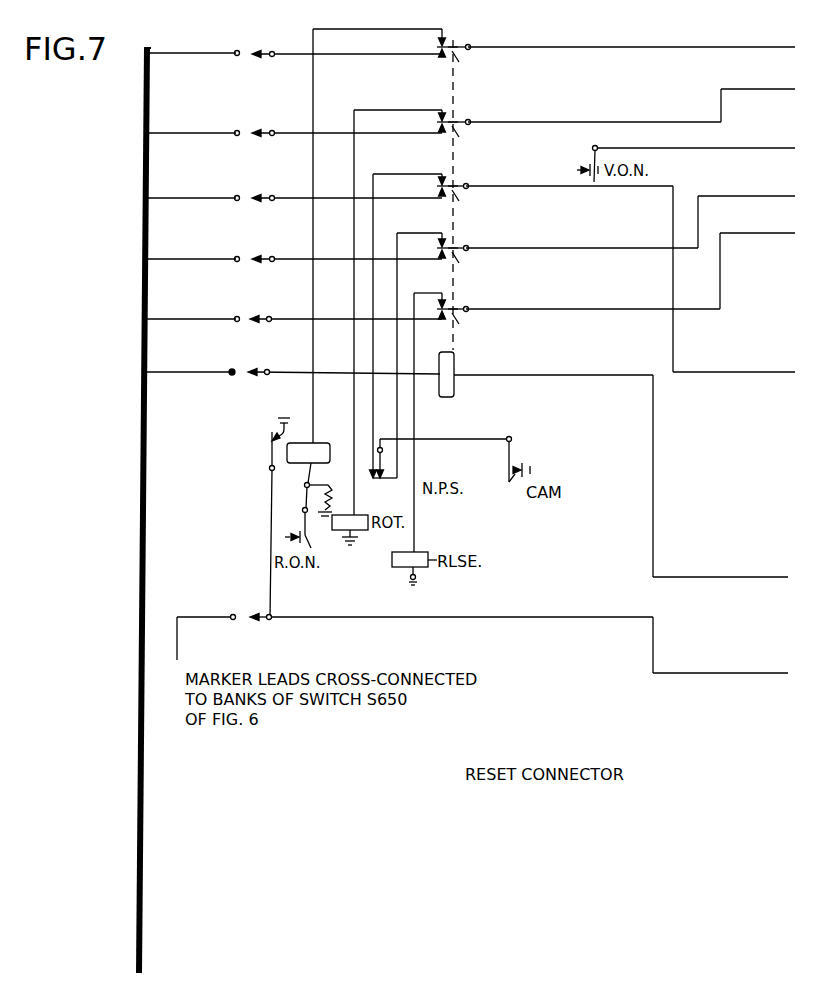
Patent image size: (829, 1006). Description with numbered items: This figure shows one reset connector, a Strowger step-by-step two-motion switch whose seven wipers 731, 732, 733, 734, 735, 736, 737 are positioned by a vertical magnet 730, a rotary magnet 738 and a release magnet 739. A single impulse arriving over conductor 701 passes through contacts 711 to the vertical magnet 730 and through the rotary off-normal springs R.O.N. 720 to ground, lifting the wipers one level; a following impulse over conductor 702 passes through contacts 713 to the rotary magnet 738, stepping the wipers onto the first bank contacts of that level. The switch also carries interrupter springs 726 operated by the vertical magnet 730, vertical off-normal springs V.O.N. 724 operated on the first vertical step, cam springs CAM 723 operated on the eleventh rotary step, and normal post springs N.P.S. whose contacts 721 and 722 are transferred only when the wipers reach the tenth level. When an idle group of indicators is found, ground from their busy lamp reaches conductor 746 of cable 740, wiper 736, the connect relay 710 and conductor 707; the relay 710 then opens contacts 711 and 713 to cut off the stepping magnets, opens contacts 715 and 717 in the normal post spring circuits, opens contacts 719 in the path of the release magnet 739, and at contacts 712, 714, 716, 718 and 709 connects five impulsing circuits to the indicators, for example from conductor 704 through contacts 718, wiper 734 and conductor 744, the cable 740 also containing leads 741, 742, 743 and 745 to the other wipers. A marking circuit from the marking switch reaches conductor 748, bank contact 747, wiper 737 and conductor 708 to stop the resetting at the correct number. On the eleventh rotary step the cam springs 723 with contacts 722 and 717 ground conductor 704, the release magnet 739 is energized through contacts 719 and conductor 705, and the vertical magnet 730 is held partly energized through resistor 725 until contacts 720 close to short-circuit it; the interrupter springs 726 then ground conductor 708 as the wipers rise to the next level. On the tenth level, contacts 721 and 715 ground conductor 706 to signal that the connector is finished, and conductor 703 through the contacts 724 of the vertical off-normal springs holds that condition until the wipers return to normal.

The conductor 701 is at (738, 47).
The conductor 702 is at (738, 88).
The conductor 703 is at (740, 148).
The conductor 704 is at (740, 196).
The conductor 705 is at (740, 233).
The conductor 706 is at (738, 372).
The conductor 707 is at (733, 576).
The conductor 708 is at (732, 673).
The connect relay contacts 709 is at (456, 320).
The connect relay 710 is at (455, 358).
The connect relay contacts 711 is at (455, 47).
The connect relay contacts 712 is at (458, 57).
The connect relay contacts 713 is at (453, 121).
The connect relay contacts 714 is at (456, 132).
The connect relay contacts 715 is at (453, 185).
The connect relay contacts 716 is at (456, 197).
The connect relay contacts 717 is at (453, 247).
The connect relay contacts 718 is at (456, 259).
The connect relay contacts 719 is at (453, 308).
The rotary off-normal springs 720 is at (302, 531).
The normal post spring contacts 721 is at (373, 481).
The normal post spring contacts 722 is at (382, 483).
The cam springs 723 is at (517, 464).
The vertical off-normal springs 724 is at (590, 165).
The resistor 725 is at (331, 497).
The interrupter springs 726 is at (275, 420).
The vertical magnet 730 is at (319, 440).
The wiper 731 is at (260, 56).
The wiper 732 is at (260, 135).
The wiper 733 is at (260, 200).
The wiper 734 is at (260, 261).
The wiper 735 is at (260, 321).
The wiper 736 is at (256, 373).
The wiper 737 is at (252, 625).
The rotary magnet 738 is at (359, 541).
The release magnet 739 is at (424, 578).
The cable 740 is at (137, 812).
The marker lead 741 is at (206, 52).
The marker lead 742 is at (206, 132).
The marker lead 743 is at (206, 197).
The conductor 744 is at (206, 258).
The marker lead 745 is at (206, 318).
The conductor 746 is at (206, 371).
The bank contact 747 is at (236, 613).
The conductor 748 is at (177, 648).